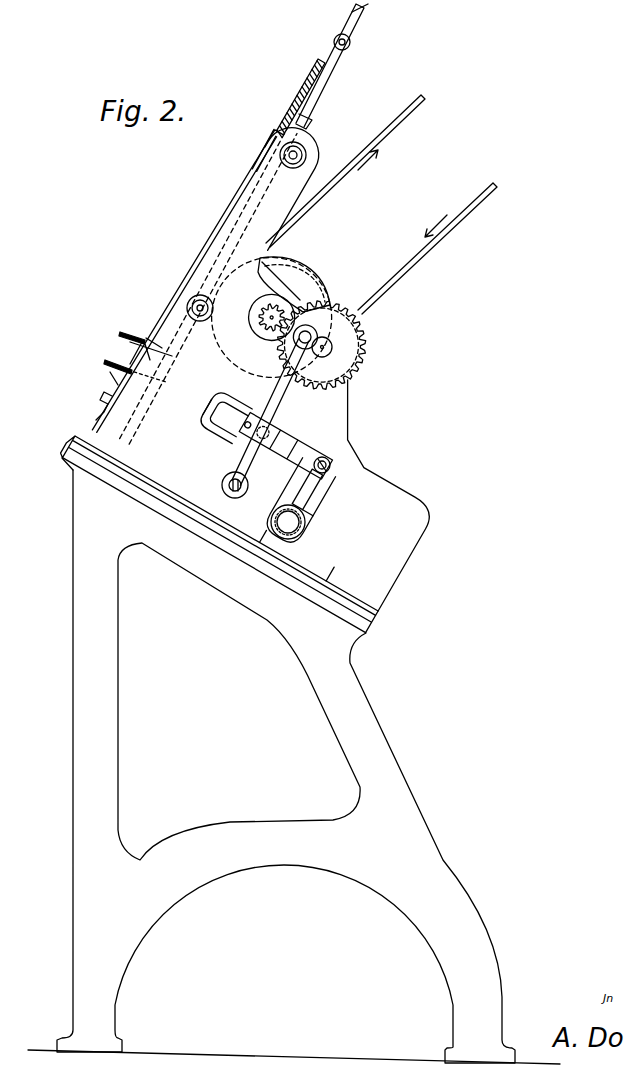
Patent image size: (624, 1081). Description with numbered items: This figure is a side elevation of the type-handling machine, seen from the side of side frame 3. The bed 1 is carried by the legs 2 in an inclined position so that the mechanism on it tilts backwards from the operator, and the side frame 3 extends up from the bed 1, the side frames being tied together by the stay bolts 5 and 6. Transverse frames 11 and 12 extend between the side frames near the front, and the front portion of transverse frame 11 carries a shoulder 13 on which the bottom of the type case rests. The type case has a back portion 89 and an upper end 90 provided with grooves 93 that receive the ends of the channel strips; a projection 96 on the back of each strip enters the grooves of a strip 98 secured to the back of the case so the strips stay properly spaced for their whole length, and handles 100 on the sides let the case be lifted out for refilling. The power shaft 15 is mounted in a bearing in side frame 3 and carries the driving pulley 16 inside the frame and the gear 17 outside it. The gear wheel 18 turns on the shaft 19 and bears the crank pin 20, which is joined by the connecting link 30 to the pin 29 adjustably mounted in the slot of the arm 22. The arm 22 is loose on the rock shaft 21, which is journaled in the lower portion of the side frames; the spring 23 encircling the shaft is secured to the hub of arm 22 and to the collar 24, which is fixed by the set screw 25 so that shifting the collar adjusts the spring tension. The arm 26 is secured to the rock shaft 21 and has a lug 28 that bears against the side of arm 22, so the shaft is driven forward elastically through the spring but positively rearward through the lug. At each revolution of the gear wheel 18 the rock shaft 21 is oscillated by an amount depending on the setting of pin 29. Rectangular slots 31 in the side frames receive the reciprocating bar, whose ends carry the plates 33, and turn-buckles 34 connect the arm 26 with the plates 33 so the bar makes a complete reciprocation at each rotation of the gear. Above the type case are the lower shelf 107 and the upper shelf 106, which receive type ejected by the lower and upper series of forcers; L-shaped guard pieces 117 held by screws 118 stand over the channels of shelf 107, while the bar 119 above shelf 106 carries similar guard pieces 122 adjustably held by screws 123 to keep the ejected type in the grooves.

The bed 1 is at (373, 626).
The legs 2 is at (428, 805).
The side frame 3 is at (318, 148).
The stay bolt 5 is at (289, 168).
The stay bolt 6 is at (198, 321).
The transverse frame 11 is at (381, 204).
The transverse frame 12 is at (102, 408).
The shoulder 13 is at (432, 514).
The power shaft 15 is at (312, 276).
The driving pulley 16 is at (288, 272).
The gear 17 is at (258, 338).
The gear wheel 18 is at (365, 338).
The shaft 19 is at (322, 358).
The crank pin 20 is at (312, 333).
The rock shaft 21 is at (304, 540).
The arm 22 is at (262, 463).
The spring 23 is at (267, 535).
The collar 24 is at (325, 565).
The set screw 25 is at (305, 526).
The arm 26 is at (326, 488).
The lug 28 is at (305, 500).
The pin 29 is at (222, 483).
The connecting link 30 is at (282, 405).
The rectangular slot 31 is at (236, 405).
The plate 33 is at (240, 438).
The turn-buckle 34 is at (322, 456).
The back portion 89 is at (330, 78).
The upper end 90 is at (351, 13).
The groove 93 is at (362, 12).
The projection 96 is at (284, 125).
The strip 98 is at (309, 122).
The handle 100 is at (350, 46).
The upper shelf 106 is at (128, 356).
The lower shelf 107 is at (112, 376).
The guard piece 117 is at (158, 378).
The screw 118 is at (105, 364).
The bar 119 is at (146, 336).
The guard piece 122 is at (165, 352).
The screw 123 is at (120, 335).